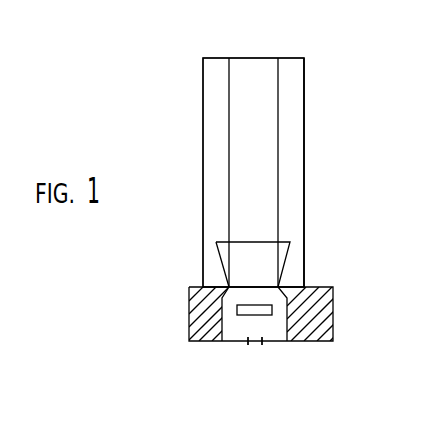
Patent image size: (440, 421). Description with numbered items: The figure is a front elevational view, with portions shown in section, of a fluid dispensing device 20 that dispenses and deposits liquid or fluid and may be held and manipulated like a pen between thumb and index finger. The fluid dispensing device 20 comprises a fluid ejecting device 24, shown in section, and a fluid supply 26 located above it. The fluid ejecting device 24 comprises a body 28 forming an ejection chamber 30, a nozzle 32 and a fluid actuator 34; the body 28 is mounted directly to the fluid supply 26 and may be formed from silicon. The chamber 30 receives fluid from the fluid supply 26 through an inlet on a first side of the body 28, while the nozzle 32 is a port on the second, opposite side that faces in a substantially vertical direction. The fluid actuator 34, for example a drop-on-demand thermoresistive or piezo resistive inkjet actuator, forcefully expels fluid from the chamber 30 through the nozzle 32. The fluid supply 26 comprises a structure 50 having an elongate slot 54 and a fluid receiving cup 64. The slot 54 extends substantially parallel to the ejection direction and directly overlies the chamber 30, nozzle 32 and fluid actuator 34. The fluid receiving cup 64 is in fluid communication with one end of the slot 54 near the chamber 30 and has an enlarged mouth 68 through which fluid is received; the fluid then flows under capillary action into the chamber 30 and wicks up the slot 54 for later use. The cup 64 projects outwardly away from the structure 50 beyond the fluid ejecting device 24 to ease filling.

The fluid dispensing device 20 is at (150, 77).
The fluid supply 26 is at (311, 78).
The structure 50 is at (304, 115).
The elongate slot 54 is at (278, 158).
The fluid receiving cup 64 is at (217, 229).
The mouth 68 is at (290, 242).
The fluid ejecting device 24 is at (345, 291).
The body 28 is at (189, 305).
The ejection chamber 30 is at (287, 315).
The nozzle 32 is at (252, 343).
The fluid actuator 34 is at (267, 318).